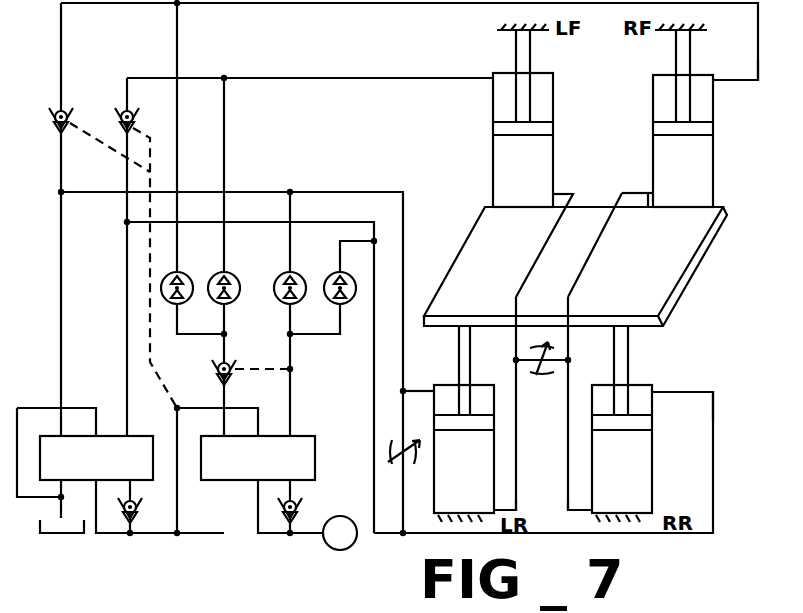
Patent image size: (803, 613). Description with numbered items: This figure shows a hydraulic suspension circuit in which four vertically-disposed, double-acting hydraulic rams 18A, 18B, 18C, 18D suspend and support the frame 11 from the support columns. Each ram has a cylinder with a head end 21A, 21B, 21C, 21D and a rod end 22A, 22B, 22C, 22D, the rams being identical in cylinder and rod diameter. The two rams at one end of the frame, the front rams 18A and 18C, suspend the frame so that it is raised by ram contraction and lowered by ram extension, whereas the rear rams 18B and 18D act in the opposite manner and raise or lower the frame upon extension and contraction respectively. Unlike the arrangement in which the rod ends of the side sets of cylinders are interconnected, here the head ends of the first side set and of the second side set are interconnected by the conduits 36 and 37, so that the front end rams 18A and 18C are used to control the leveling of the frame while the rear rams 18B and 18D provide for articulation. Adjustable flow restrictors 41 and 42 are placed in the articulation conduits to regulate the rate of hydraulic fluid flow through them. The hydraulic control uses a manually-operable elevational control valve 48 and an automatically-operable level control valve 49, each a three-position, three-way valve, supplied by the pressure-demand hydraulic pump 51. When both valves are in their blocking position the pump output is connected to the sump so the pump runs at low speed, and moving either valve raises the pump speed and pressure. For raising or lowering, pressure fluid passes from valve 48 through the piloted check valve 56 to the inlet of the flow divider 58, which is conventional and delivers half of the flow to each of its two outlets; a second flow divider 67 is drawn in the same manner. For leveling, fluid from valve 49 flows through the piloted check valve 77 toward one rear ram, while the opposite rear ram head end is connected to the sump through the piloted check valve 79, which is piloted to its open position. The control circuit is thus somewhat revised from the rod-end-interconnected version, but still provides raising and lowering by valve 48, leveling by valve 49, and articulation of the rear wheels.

The frame 11 is at (700, 278).
The right front ram 18A is at (714, 160).
The right rear ram 18B is at (655, 481).
The left front ram 18C is at (492, 147).
The left rear ram 18D is at (495, 457).
The head end 21A is at (648, 192).
The head end 21B is at (597, 514).
The head end 21C is at (560, 192).
The head end 21D is at (510, 505).
The rod end 22A is at (727, 67).
The rod end 22B is at (657, 391).
The rod end 22C is at (480, 78).
The rod end 22D is at (432, 389).
The conduit 36 is at (595, 254).
The conduit 37 is at (535, 264).
The adjustable flow restrictor 41 is at (546, 374).
The adjustable flow restrictor 42 is at (416, 466).
The elevational control valve 48 is at (315, 436).
The level control valve 49 is at (113, 436).
The hydraulic pump 51 is at (341, 515).
The piloted check valve 56 is at (215, 373).
The flow divider 58 is at (212, 262).
The flow divider 67 is at (327, 262).
The piloted check valve 77 is at (72, 113).
The piloted check valve 79 is at (150, 106).